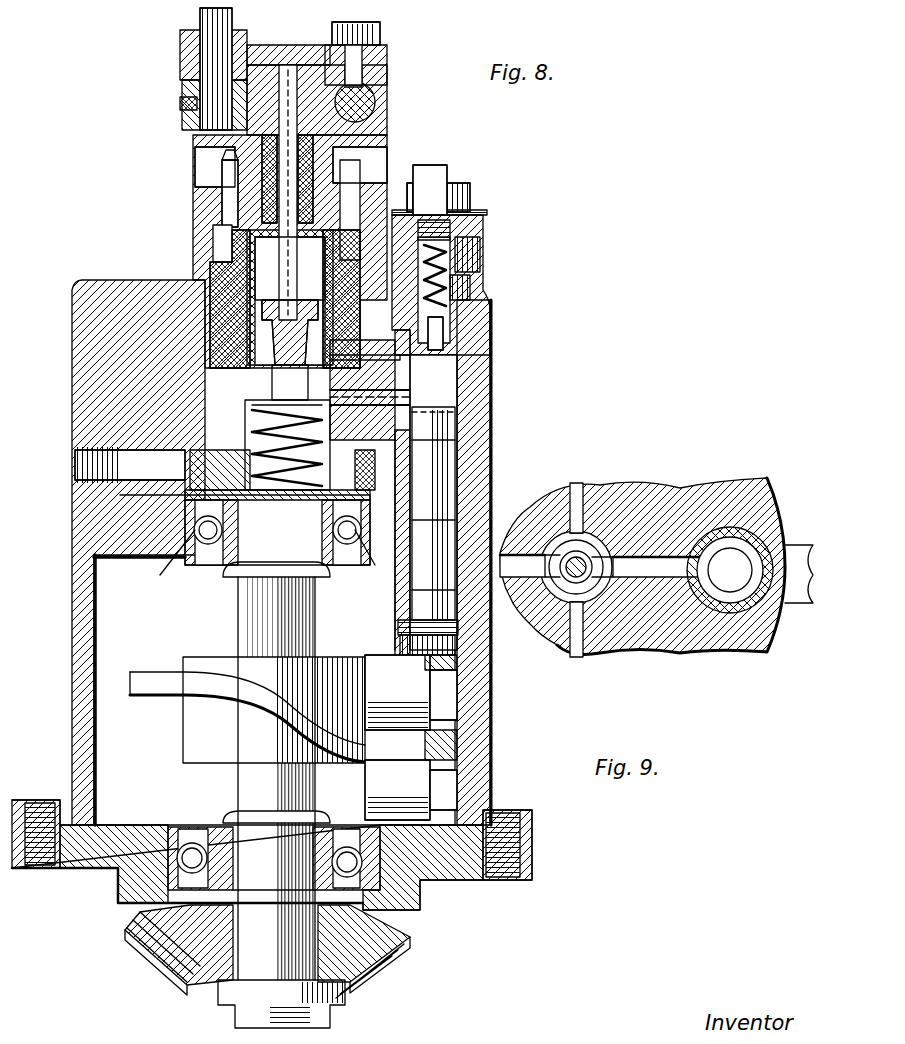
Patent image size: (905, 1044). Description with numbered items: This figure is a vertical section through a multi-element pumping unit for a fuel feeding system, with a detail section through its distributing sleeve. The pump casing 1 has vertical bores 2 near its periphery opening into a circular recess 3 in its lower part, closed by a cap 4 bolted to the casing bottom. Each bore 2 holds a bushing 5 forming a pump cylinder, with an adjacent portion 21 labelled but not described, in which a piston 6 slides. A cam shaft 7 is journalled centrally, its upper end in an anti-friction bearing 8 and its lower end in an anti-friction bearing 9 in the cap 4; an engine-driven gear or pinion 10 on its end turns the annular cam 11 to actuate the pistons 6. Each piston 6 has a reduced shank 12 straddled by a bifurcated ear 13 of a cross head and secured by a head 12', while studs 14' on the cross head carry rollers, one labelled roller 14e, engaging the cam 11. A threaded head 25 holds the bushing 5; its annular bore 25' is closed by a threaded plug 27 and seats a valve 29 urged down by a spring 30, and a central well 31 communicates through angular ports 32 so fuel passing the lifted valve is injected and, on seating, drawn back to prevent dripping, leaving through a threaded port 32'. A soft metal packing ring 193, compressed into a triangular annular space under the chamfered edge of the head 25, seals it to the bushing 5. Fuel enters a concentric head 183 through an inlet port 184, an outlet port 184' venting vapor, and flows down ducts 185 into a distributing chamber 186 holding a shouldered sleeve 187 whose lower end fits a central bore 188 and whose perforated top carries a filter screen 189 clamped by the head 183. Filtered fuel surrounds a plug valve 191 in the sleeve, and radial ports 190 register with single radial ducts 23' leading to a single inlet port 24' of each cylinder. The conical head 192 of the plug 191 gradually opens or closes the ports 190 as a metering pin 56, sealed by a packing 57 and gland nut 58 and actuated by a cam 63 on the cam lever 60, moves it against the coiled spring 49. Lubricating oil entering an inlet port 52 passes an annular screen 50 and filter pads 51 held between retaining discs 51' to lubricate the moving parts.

In FIG. 8, the pump casing 1 is at (100, 282).
In FIG. 8, the vertical bores 2 is at (472, 462).
In FIG. 8, the circular recess 3 is at (94, 615).
In FIG. 8, the cap 4 is at (100, 853).
In FIG. 8, the bushing 5 is at (492, 440).
In FIG. 9, the bushing 5 is at (745, 600).
In FIG. 8, the piston 6 is at (412, 598).
In FIG. 9, the piston 6 is at (750, 570).
In FIG. 8, the cam shaft 7 is at (252, 627).
In FIG. 8, the anti-friction bearing 8 is at (208, 548).
In FIG. 8, the anti-friction bearing 9 is at (190, 850).
In FIG. 8, the gear or pinion 10 is at (190, 935).
In FIG. 8, the annular cam 11 is at (150, 690).
In FIG. 8, the reduced shank 12 is at (399, 622).
In FIG. 8, the bifurcated ear 13 is at (400, 645).
In FIG. 8, the roller 14e is at (411, 775).
In FIG. 8, the vertical spaced studs 14' is at (480, 740).
In FIG. 8, the head 12' is at (476, 667).
In FIG. 8, the bore 21 is at (452, 483).
In FIG. 8, the radial ducts 23' is at (480, 372).
In FIG. 9, the radial ducts 23' is at (606, 580).
In FIG. 8, the inlet port 24' is at (509, 387).
In FIG. 9, the inlet port 24' is at (687, 511).
In FIG. 8, the threaded head 25 is at (472, 270).
In FIG. 8, the annular bore 25' is at (428, 178).
In FIG. 8, the threaded plug 27 is at (470, 195).
In FIG. 8, the valve 29 is at (448, 290).
In FIG. 8, the spring 30 is at (450, 238).
In FIG. 8, the central well 31 is at (450, 330).
In FIG. 8, the angular ports 32 is at (512, 289).
In FIG. 8, the threaded port 32' is at (509, 251).
In FIG. 8, the coiled spring 49 is at (280, 495).
In FIG. 8, the annular screen 50 is at (170, 478).
In FIG. 8, the filter pads 51 is at (198, 453).
In FIG. 8, the retaining discs 51' is at (352, 562).
In FIG. 8, the inlet port 52 is at (90, 465).
In FIG. 8, the metering pin 56 is at (300, 45).
In FIG. 9, the metering pin 56 is at (586, 550).
In FIG. 8, the packing 57 is at (375, 115).
In FIG. 8, the gland nut 58 is at (212, 100).
In FIG. 8, the double cam lever 60 is at (182, 60).
In FIG. 8, the cam 63 is at (262, 60).
In FIG. 8, the concentric head 183 is at (195, 200).
In FIG. 8, the inlet port 184 is at (160, 141).
In FIG. 8, the outlet port 184' is at (397, 152).
In FIG. 8, the ducts 185 is at (230, 203).
In FIG. 8, the distributing chamber 186 is at (220, 235).
In FIG. 8, the shouldered sleeve 187 is at (245, 350).
In FIG. 8, the central bore 188 is at (250, 380).
In FIG. 8, the filter cloth or screen 189 is at (205, 345).
In FIG. 8, the radial ports 190 is at (420, 392).
In FIG. 9, the radial ports 190 is at (600, 500).
In FIG. 8, the plug valve 191 is at (245, 415).
In FIG. 9, the plug valve 191 is at (576, 585).
In FIG. 8, the conical or tapered head 192 is at (220, 278).
In FIG. 9, the conical or tapered head 192 is at (598, 585).
In FIG. 8, the packing ring 193 is at (450, 348).